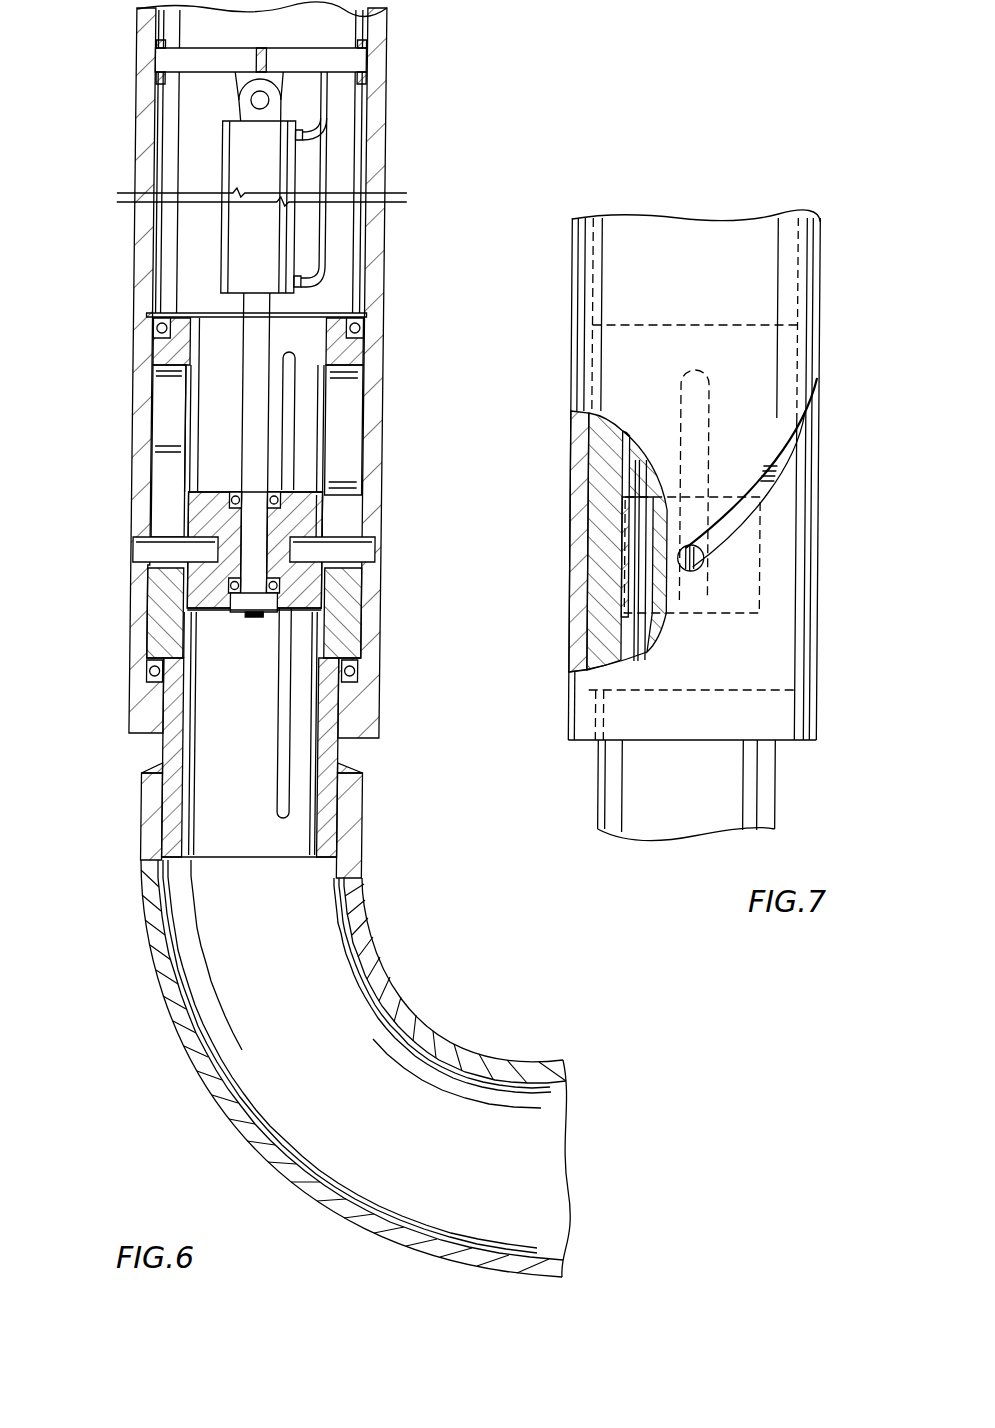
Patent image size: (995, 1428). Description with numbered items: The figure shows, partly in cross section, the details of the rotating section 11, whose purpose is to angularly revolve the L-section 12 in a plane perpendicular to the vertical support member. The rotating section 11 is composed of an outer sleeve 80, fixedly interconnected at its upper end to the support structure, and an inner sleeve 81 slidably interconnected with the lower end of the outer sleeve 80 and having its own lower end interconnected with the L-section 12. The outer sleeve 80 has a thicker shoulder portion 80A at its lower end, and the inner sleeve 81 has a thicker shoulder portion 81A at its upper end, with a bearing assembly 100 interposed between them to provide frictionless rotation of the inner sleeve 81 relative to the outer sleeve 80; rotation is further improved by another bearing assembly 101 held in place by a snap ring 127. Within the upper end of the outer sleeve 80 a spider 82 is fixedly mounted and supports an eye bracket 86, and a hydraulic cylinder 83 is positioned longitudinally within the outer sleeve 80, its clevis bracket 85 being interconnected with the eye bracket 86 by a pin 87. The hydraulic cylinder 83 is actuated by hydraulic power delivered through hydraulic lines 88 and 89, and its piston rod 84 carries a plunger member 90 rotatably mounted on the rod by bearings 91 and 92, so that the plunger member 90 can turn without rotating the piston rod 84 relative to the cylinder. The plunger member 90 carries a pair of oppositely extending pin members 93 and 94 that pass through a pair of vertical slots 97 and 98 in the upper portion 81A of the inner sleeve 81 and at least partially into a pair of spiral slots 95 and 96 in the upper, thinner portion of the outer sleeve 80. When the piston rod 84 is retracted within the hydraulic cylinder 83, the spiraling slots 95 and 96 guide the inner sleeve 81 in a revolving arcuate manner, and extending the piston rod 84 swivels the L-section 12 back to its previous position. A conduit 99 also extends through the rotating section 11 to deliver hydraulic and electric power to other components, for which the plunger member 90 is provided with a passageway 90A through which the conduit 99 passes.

In FIG. 6, the rotating section 11 is at (97, 327).
In FIG. 7, the rotating section 11 is at (851, 285).
In FIG. 6, the L-section 12 is at (157, 973).
In FIG. 6, the outer sleeve 80 is at (148, 466).
In FIG. 7, the outer sleeve 80 is at (824, 489).
In FIG. 6, the thicker shoulder portion 80A is at (175, 716).
In FIG. 7, the thicker shoulder portion 80A is at (612, 716).
In FIG. 6, the inner sleeve 81 is at (167, 746).
In FIG. 7, the inner sleeve 81 is at (785, 795).
In FIG. 6, the thicker shoulder portion 81A is at (367, 429).
In FIG. 7, the thicker shoulder portion 81A is at (803, 546).
In FIG. 6, the spider 82 is at (201, 48).
In FIG. 6, the hydraulic cylinder 83 is at (245, 148).
In FIG. 6, the piston rod 84 is at (250, 374).
In FIG. 6, the clevis bracket 85 is at (240, 106).
In FIG. 6, the eye bracket 86 is at (238, 80).
In FIG. 6, the pin 87 is at (270, 101).
In FIG. 6, the hydraulic line 88 is at (331, 84).
In FIG. 6, the hydraulic line 89 is at (329, 165).
In FIG. 6, the plunger member 90 is at (216, 490).
In FIG. 7, the plunger member 90 is at (606, 518).
In FIG. 7, the passageway 90A is at (629, 550).
In FIG. 6, the bearing 91 is at (192, 508).
In FIG. 6, the bearing 92 is at (240, 595).
In FIG. 6, the pin member 93 is at (148, 574).
In FIG. 6, the pin member 94 is at (375, 555).
In FIG. 7, the pin member 94 is at (705, 567).
In FIG. 6, the spiral slot 95 is at (146, 541).
In FIG. 6, the spiral slot 96 is at (378, 530).
In FIG. 7, the spiral slot 96 is at (773, 470).
In FIG. 6, the vertical slot 97 is at (177, 428).
In FIG. 6, the vertical slot 98 is at (350, 393).
In FIG. 7, the vertical slot 98 is at (714, 403).
In FIG. 6, the conduit 99 is at (302, 362).
In FIG. 7, the conduit 99 is at (625, 637).
In FIG. 6, the bearing assembly 100 is at (362, 673).
In FIG. 6, the bearing assembly 101 is at (168, 332).
In FIG. 6, the snap ring 127 is at (203, 315).